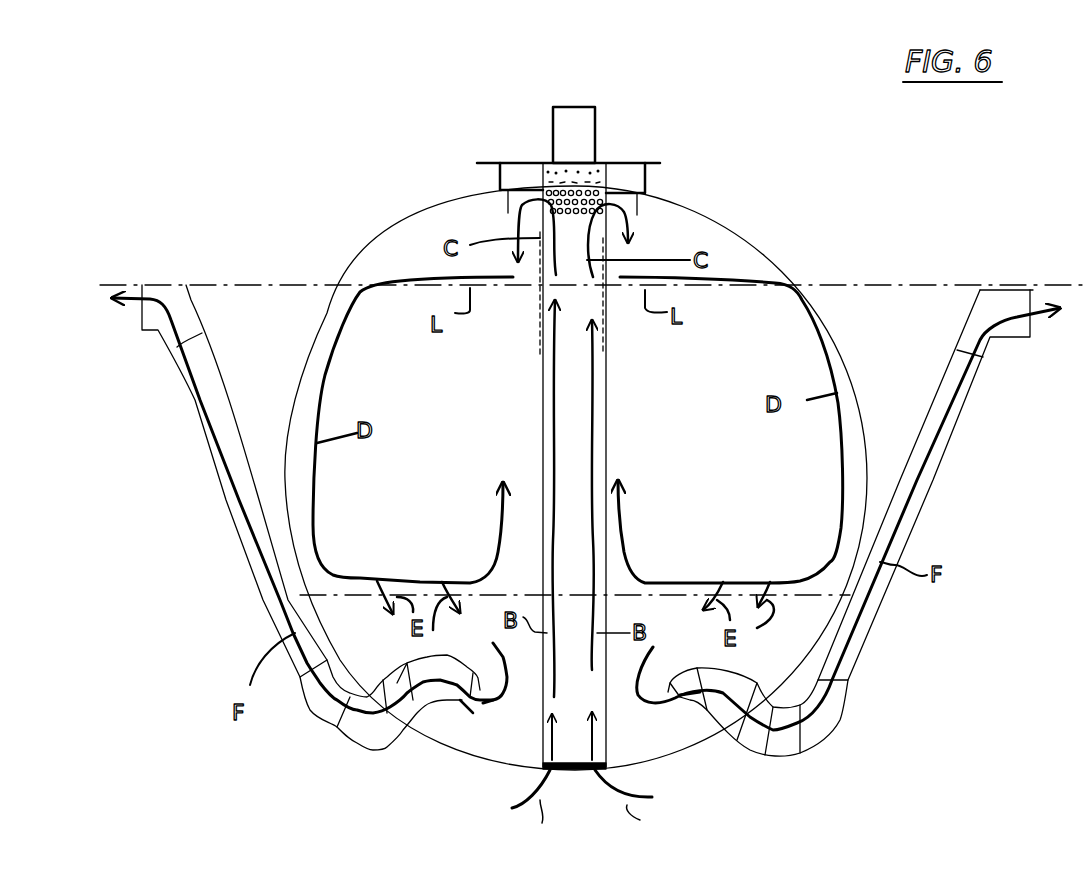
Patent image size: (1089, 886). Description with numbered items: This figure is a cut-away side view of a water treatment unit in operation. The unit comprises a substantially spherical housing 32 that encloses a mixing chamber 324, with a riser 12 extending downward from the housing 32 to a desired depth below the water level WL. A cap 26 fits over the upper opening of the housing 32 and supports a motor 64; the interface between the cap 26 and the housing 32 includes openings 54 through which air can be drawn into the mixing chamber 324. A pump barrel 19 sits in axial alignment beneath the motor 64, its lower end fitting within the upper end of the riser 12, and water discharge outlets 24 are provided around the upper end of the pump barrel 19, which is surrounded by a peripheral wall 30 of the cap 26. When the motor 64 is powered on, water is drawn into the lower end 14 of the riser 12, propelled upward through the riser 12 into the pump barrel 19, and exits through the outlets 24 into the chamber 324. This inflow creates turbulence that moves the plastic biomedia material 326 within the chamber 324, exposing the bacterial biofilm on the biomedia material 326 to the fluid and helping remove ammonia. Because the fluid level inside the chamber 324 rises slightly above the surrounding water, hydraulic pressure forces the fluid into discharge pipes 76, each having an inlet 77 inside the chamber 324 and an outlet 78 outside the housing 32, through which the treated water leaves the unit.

The riser 12 is at (608, 442).
The lower end of riser 14 is at (572, 770).
The pump barrel 19 is at (543, 323).
The water discharge outlets 24 is at (600, 193).
The cap 26 is at (517, 162).
The peripheral wall 30 is at (634, 196).
The housing 32 is at (753, 243).
The openings 54 is at (497, 183).
The motor 64 is at (570, 130).
The discharge pipe 76 is at (387, 750).
The inlet 77 is at (585, 720).
The outlet 78 is at (137, 317).
The mixing chamber 324 is at (767, 347).
The plastic biomedia material 326 is at (380, 337).
The water level WL is at (937, 290).